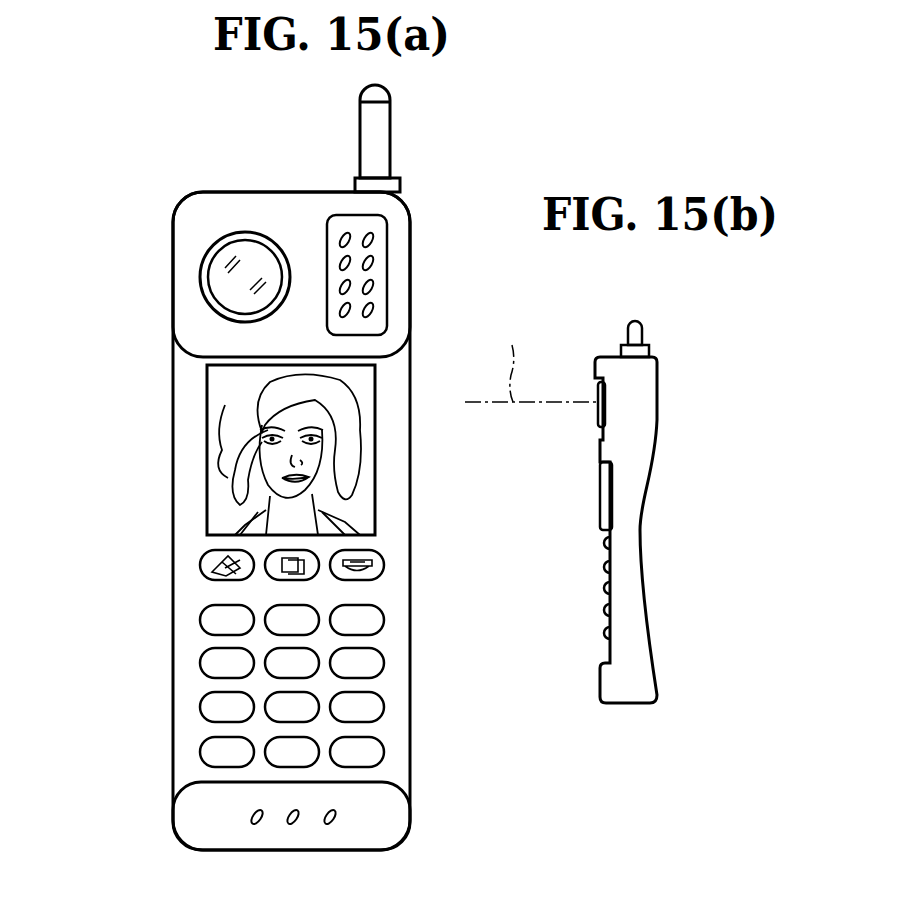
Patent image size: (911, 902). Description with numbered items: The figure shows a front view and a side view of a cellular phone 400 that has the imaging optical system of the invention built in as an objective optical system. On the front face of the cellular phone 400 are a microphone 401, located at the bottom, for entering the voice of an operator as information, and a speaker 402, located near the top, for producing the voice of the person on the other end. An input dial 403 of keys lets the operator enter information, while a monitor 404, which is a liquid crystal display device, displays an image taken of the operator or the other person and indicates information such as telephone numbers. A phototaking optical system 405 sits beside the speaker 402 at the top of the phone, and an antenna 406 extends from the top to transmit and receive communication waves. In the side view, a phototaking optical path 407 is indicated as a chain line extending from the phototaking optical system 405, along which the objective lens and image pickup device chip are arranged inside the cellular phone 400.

In FIG. 15A, the cellular phone 400 is at (131, 514).
In FIG. 15B, the cellular phone 400 is at (698, 538).
In FIG. 15A, the microphone 401 is at (250, 817).
In FIG. 15A, the speaker 402 is at (340, 222).
In FIG. 15A, the input dial 403 is at (212, 660).
In FIG. 15B, the input dial 403 is at (605, 610).
In FIG. 15A, the monitor 404 is at (216, 459).
In FIG. 15B, the monitor 404 is at (606, 500).
In FIG. 15A, the phototaking optical system 405 is at (220, 291).
In FIG. 15B, the phototaking optical system 405 is at (598, 415).
In FIG. 15A, the antenna 406 is at (386, 129).
In FIG. 15B, the antenna 406 is at (642, 330).
In FIG. 15B, the phototaking optical path 407 is at (531, 358).